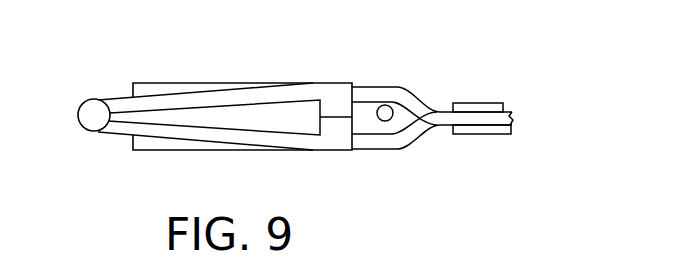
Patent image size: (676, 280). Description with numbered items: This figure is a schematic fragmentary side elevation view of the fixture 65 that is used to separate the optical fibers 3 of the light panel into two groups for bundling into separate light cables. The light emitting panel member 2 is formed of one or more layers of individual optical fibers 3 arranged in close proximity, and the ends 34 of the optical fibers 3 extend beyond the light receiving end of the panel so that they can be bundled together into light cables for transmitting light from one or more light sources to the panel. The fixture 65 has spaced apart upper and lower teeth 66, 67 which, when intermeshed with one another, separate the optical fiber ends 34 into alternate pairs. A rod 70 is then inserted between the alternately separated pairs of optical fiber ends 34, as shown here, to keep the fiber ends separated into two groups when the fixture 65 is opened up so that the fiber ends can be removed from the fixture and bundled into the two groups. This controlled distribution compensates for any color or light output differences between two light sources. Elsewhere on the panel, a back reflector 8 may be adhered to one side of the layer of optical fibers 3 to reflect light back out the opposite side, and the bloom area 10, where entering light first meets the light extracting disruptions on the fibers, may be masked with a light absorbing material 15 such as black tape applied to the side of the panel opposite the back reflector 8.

The light emitting panel member 2 is at (503, 117).
The optical fibers 3 is at (513, 118).
The back reflector 8 is at (487, 134).
The bloom area 10 is at (373, 70).
The light absorbing material 15 is at (483, 107).
The ends of the optical fibers 34 is at (160, 88).
The fixture 65 is at (237, 89).
The upper teeth 66 is at (338, 92).
The lower teeth 67 is at (337, 143).
The rod 70 is at (392, 117).